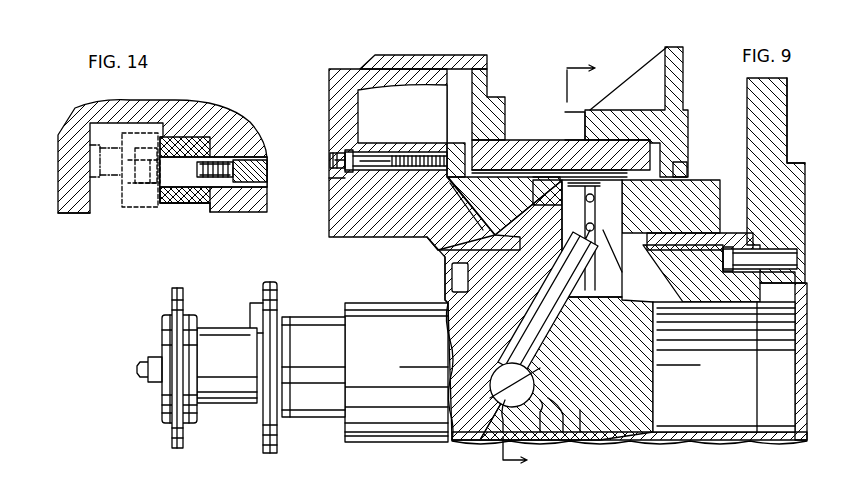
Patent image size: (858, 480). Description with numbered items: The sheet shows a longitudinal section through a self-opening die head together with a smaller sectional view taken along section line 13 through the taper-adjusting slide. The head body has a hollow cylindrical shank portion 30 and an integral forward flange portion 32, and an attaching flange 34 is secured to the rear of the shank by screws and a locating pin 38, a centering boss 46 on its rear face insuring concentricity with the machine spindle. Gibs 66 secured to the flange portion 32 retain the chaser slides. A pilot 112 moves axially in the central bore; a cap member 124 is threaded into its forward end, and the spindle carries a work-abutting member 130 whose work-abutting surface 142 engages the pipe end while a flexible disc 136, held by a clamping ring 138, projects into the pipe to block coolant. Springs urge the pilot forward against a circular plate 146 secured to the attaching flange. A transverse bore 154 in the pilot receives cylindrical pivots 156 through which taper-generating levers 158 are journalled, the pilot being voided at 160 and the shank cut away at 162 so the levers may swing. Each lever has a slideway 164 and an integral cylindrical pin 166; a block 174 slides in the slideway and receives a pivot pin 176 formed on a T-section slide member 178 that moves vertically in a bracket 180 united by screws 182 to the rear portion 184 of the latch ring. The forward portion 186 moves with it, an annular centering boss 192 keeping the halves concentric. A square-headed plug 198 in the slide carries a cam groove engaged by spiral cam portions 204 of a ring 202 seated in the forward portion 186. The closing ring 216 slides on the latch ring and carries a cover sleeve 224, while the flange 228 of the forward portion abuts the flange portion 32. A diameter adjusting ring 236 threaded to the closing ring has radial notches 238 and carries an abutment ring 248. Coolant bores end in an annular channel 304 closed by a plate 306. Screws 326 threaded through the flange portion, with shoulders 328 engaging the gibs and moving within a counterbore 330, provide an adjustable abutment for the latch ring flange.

In FIG. 9, the section line 13— 13 is at (549, 261).
In FIG. 9, the shank portion 30 is at (707, 432).
In FIG. 9, the forward flange portion 32 is at (400, 113).
In FIG. 9, the attaching flange 34 is at (800, 205).
In FIG. 9, the locating pin 38 is at (800, 252).
In FIG. 9, the centering boss 46 is at (790, 170).
In FIG. 9, the gib 66 is at (329, 82).
In FIG. 9, the pilot 112 is at (648, 390).
In FIG. 9, the cap member 124 is at (285, 337).
In FIG. 9, the work-abutting member 130 is at (215, 335).
In FIG. 9, the disc 136 is at (177, 287).
In FIG. 9, the clamping ring 138 is at (162, 405).
In FIG. 9, the work-abutting surface 142 is at (258, 280).
In FIG. 9, the circular plate 146 is at (807, 325).
In FIG. 9, the transverse bore 154 is at (575, 433).
In FIG. 9, the cylindrical pivot 156 is at (540, 433).
In FIG. 14, the taper-generating lever 158 is at (127, 133).
In FIG. 9, the taper-generating lever 158 is at (552, 320).
In FIG. 9, the void 160 is at (455, 305).
In FIG. 9, the cut-away 162 is at (648, 263).
In FIG. 14, the slideway 164 is at (143, 147).
In FIG. 14, the cylindrical pin 166 is at (98, 145).
In FIG. 14, the block 174 is at (150, 193).
In FIG. 14, the pivot pin 176 is at (128, 188).
In FIG. 14, the slide member 178 is at (175, 157).
In FIG. 14, the bracket 180 is at (207, 203).
In FIG. 9, the bracket 180 is at (612, 296).
In FIG. 14, the screw 182 is at (265, 163).
In FIG. 9, the screw 182 is at (590, 230).
In FIG. 14, the rear portion of latch ring 184 is at (90, 107).
In FIG. 9, the rear portion of latch ring 184 is at (745, 165).
In FIG. 9, the forward portion of latch ring 186 is at (513, 187).
In FIG. 14, the annular centering boss 192 is at (85, 213).
In FIG. 9, the square-headed plug 198 is at (578, 192).
In FIG. 9, the ring 202 is at (543, 185).
In FIG. 9, the spiral cam portion 204 is at (552, 178).
In FIG. 9, the closing ring 216 is at (505, 100).
In FIG. 9, the cover sleeve 224 is at (422, 63).
In FIG. 9, the flange 228 is at (452, 150).
In FIG. 9, the diameter adjusting ring 236 is at (683, 65).
In FIG. 9, the radial notch 238 is at (583, 112).
In FIG. 9, the abutment ring 248 is at (688, 167).
In FIG. 9, the annular channel 304 is at (452, 268).
In FIG. 9, the plate 306 is at (452, 280).
In FIG. 9, the screw 326 is at (390, 155).
In FIG. 9, the shoulder 328 is at (335, 160).
In FIG. 9, the counterbore 330 is at (330, 180).